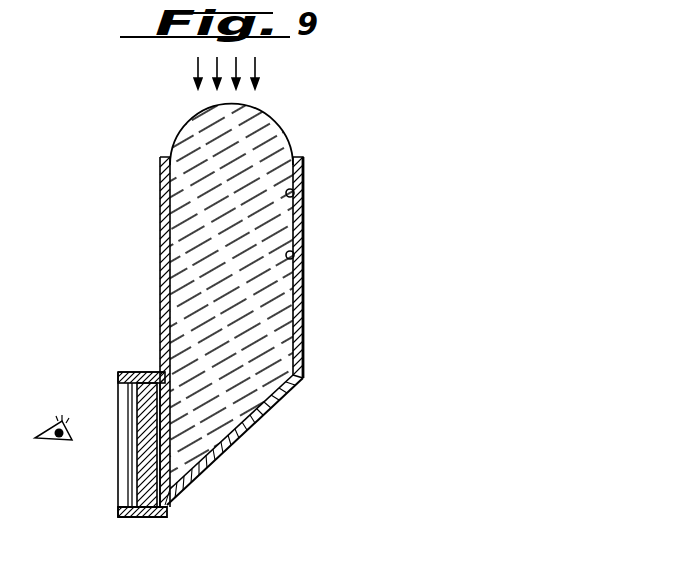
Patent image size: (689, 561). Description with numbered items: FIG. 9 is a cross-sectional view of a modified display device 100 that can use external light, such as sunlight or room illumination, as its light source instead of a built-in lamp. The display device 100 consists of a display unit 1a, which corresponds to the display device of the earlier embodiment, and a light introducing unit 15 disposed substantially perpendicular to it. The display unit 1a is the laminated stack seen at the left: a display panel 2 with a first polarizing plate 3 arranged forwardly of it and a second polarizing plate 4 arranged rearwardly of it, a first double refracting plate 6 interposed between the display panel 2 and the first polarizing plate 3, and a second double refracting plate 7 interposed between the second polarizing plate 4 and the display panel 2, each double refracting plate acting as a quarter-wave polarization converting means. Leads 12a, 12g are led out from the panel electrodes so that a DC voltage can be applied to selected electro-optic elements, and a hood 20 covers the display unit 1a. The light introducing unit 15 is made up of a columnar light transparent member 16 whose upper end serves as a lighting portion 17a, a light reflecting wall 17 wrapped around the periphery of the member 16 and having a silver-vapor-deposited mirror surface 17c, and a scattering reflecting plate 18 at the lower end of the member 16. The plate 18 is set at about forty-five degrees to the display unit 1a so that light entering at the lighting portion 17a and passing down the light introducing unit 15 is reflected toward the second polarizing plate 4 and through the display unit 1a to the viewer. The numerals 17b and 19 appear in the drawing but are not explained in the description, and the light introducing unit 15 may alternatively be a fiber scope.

The display unit 1a is at (137, 438).
The display panel 2 is at (118, 395).
The first polarizing plate 3 is at (118, 512).
The second polarizing plate 4 is at (170, 499).
The first double refracting plate 6 is at (130, 416).
The second double refracting plate 7 is at (150, 462).
The lead 12a is at (153, 372).
The lead 12g is at (152, 518).
The light introducing unit 15 is at (302, 324).
The columnar light transparent member 16 is at (278, 218).
The light reflecting wall 17 is at (302, 373).
The lighting portion 17a is at (291, 155).
The inclined reflecting surface 17b is at (280, 400).
The mirror surface 17c is at (294, 258).
The scattering reflecting plate 18 is at (222, 456).
The locating pin 19 is at (294, 193).
The hood 20 is at (128, 371).
The display device 100 is at (262, 421).